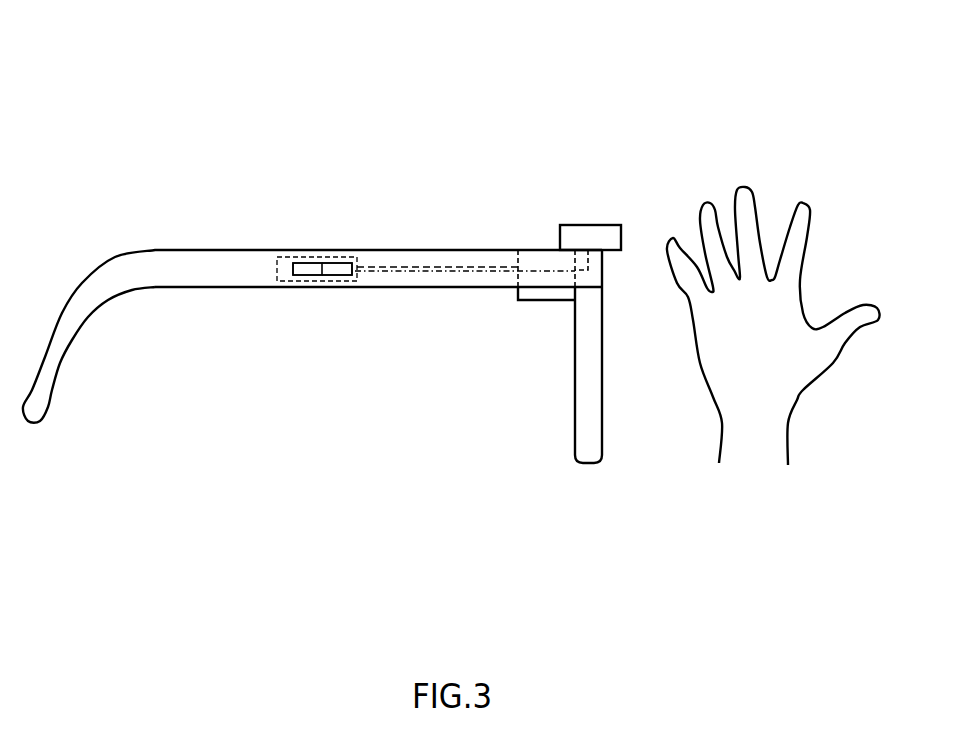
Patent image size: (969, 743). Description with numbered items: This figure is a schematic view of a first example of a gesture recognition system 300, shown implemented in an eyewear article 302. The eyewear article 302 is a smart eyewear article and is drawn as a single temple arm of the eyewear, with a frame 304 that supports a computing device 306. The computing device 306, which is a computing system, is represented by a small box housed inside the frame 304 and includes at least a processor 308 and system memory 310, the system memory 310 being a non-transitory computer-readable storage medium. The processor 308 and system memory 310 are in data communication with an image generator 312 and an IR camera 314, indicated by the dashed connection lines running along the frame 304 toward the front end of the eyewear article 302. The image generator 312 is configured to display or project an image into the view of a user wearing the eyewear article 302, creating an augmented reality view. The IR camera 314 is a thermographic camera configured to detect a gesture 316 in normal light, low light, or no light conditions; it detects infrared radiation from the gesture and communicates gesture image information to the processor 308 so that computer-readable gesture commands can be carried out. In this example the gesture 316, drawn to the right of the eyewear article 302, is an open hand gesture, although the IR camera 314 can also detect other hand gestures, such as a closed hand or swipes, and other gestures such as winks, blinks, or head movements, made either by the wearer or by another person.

The gesture recognition system 300 is at (777, 54).
The eyewear article 302 is at (140, 233).
The frame 304 is at (250, 288).
The computing device 306 is at (316, 282).
The processor 308 is at (310, 267).
The system memory 310 is at (335, 267).
The image generator 312 is at (529, 260).
The IR camera 314 is at (594, 225).
The gesture 316 is at (806, 202).